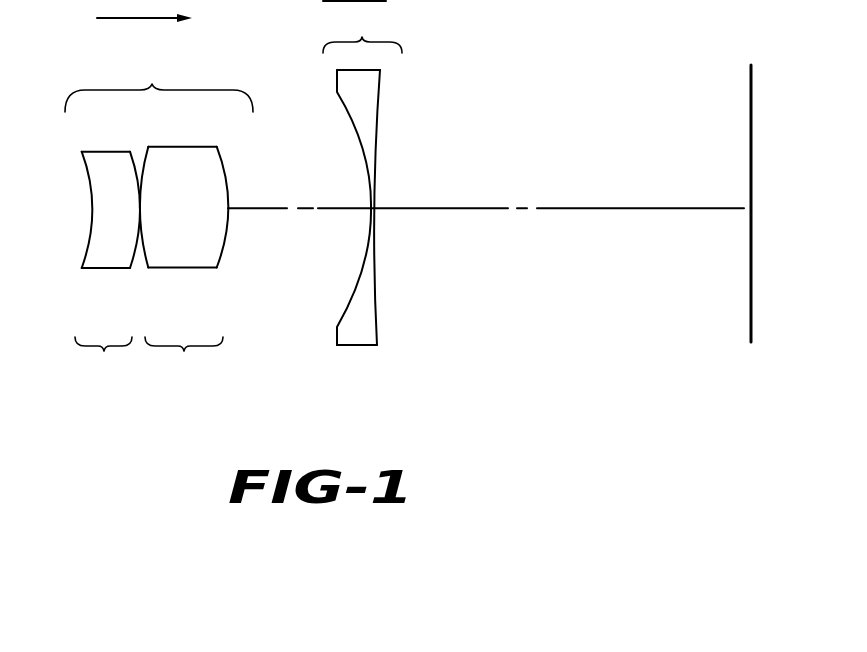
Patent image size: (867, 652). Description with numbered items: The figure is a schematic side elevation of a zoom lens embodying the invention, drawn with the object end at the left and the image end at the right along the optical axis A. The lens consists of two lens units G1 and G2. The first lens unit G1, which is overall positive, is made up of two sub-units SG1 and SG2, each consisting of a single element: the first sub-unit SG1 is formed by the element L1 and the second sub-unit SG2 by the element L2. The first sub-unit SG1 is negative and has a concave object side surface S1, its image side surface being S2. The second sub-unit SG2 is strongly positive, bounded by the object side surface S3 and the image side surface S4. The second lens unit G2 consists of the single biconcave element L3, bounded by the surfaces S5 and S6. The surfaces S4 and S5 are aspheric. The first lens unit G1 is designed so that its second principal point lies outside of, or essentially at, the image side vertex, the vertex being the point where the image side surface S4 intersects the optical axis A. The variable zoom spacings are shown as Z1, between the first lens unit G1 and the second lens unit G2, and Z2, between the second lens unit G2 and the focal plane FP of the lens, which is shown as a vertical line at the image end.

The first lens unit G1 is at (150, 222).
The second lens unit G2 is at (367, 178).
The first sub-unit SG1 is at (80, 245).
The second sub-unit SG2 is at (203, 245).
The first lens element L1 is at (80, 212).
The second lens element L2 is at (203, 212).
The third lens element L3 is at (367, 204).
The first surface S1 is at (84, 250).
The second surface S2 is at (136, 256).
The third surface S3 is at (142, 258).
The fourth surface S4 is at (228, 239).
The fifth surface S5 is at (358, 277).
The sixth surface S6 is at (377, 293).
The first variable zoom spacing Z1 is at (300, 195).
The second variable zoom spacing Z2 is at (544, 195).
The optical axis A is at (486, 182).
The focal plane FP is at (752, 167).